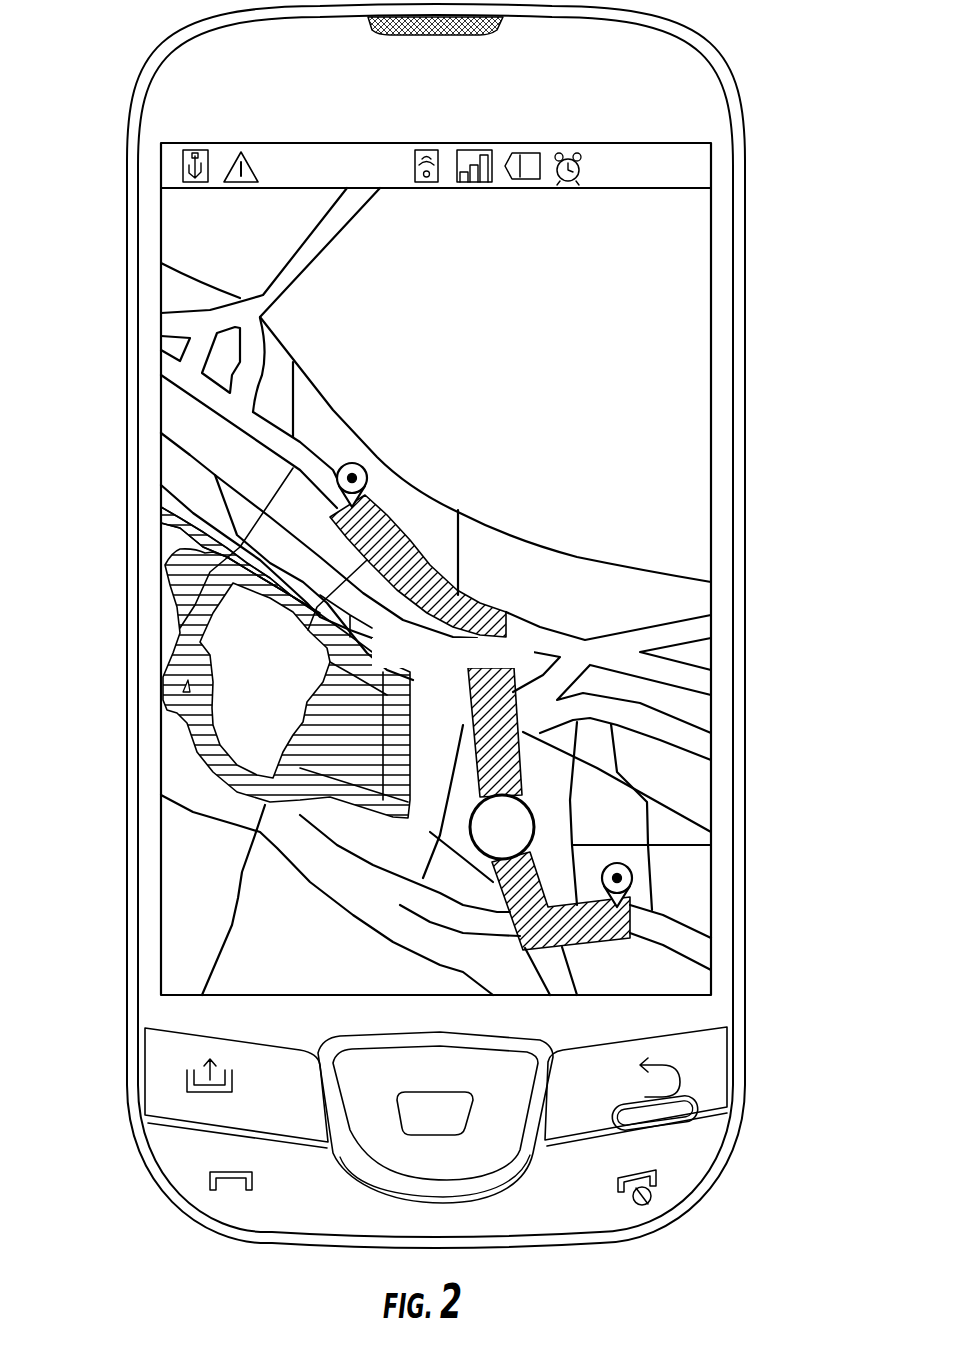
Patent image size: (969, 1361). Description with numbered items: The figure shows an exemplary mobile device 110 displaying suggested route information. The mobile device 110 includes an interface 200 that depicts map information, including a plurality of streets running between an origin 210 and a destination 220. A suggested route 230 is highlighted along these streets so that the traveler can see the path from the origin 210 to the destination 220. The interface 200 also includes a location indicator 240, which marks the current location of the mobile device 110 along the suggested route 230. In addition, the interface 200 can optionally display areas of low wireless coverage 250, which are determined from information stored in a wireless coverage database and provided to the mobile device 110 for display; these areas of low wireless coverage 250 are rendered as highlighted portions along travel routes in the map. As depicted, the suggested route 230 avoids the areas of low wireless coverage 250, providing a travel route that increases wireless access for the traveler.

The mobile device 110 is at (733, 68).
The interface 200 is at (421, 569).
The origin 210 is at (630, 878).
The destination 220 is at (360, 478).
The suggested route 230 is at (470, 613).
The location indicator 240 is at (505, 827).
The areas of low wireless coverage 250 is at (198, 727).